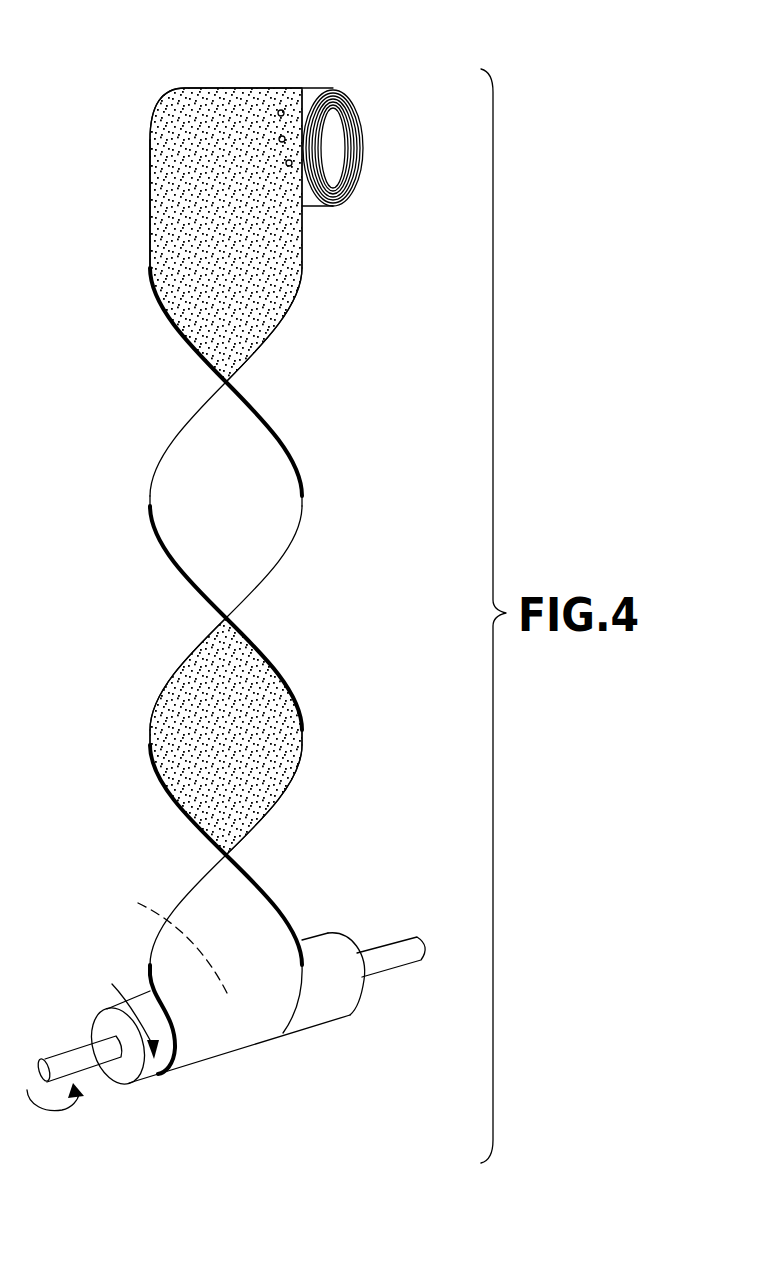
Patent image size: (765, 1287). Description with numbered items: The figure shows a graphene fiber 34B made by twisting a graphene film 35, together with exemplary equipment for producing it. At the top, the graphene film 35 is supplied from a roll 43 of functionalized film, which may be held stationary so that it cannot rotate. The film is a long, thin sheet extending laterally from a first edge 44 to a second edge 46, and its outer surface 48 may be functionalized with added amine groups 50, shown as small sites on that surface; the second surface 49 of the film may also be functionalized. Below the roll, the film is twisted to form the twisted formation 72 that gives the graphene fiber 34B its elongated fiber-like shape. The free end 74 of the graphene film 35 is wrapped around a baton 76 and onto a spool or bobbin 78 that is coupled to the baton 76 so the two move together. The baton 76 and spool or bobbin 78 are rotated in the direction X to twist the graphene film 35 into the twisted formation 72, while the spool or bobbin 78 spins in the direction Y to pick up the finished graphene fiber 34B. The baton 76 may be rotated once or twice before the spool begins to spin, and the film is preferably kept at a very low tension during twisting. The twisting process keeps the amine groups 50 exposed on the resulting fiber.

The roll 43 is at (208, 97).
The graphene film 35 is at (260, 100).
The outer surface 48 is at (170, 132).
The second edge 46 is at (150, 172).
The amine groups 50 is at (292, 162).
The first edge 44 is at (302, 232).
The twisted formation 72 is at (293, 300).
The second surface 49 is at (183, 533).
The graphene fiber 34B is at (283, 767).
The free end 74 is at (165, 939).
The baton 76 is at (411, 963).
The spool or bobbin 78 is at (320, 1025).
The direction X is at (42, 1110).
The direction Y is at (127, 1011).